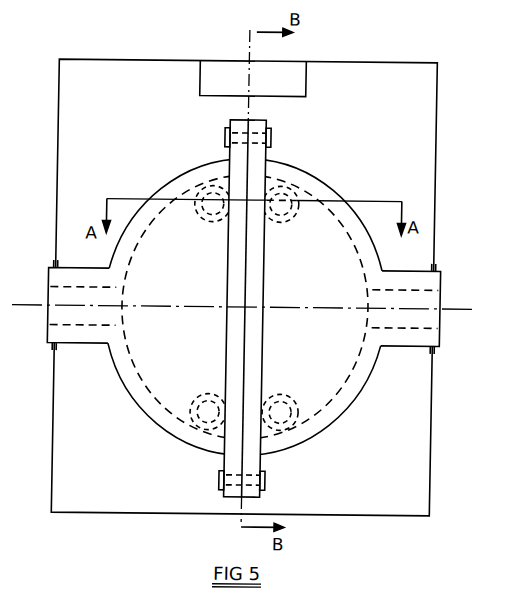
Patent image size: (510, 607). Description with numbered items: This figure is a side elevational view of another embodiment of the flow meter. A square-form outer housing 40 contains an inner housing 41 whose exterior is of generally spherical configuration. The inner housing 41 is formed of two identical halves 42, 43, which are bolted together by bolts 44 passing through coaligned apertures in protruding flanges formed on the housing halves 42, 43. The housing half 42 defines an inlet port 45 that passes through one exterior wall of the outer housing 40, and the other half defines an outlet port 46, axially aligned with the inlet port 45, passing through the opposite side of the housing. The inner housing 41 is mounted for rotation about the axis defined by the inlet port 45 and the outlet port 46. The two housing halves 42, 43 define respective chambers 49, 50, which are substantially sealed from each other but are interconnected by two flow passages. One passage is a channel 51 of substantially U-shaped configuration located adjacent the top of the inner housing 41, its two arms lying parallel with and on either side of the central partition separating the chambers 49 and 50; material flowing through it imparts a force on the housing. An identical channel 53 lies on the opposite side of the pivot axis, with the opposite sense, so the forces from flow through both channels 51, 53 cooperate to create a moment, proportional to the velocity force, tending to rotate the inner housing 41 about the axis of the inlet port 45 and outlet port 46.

The outer housing 40 is at (157, 61).
The inner housing 41 is at (330, 185).
The housing half 42 is at (368, 202).
The housing half 43 is at (178, 175).
The bolts 44 is at (267, 136).
The inlet port 45 is at (88, 341).
The outlet port 46 is at (406, 333).
The chamber 49 is at (184, 306).
The chamber 50 is at (307, 307).
The channel 51 is at (294, 170).
The channel 53 is at (286, 436).